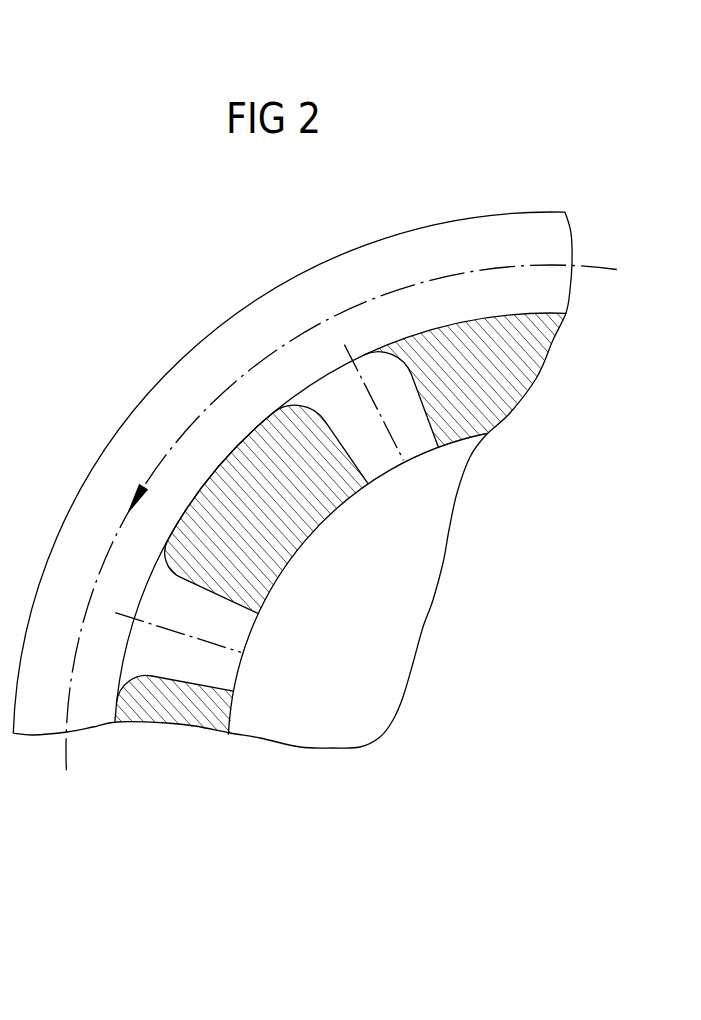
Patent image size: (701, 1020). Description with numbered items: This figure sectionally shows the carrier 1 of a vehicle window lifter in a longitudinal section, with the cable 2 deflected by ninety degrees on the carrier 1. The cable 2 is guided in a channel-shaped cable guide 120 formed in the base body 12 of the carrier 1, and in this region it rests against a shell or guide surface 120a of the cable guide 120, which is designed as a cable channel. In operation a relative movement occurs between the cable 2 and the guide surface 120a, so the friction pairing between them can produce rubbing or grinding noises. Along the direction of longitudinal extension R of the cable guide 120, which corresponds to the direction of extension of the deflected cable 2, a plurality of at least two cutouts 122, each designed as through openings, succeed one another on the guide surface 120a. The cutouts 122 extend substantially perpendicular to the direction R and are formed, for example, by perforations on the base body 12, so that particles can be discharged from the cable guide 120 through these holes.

The carrier 1 is at (0, 131).
The cable 2 is at (392, 235).
The base body 12 is at (420, 712).
The cable guide 120 is at (283, 468).
The guide surface 120a is at (503, 316).
The cutouts 122 is at (303, 806).
The direction of longitudinal extension R is at (341, 517).